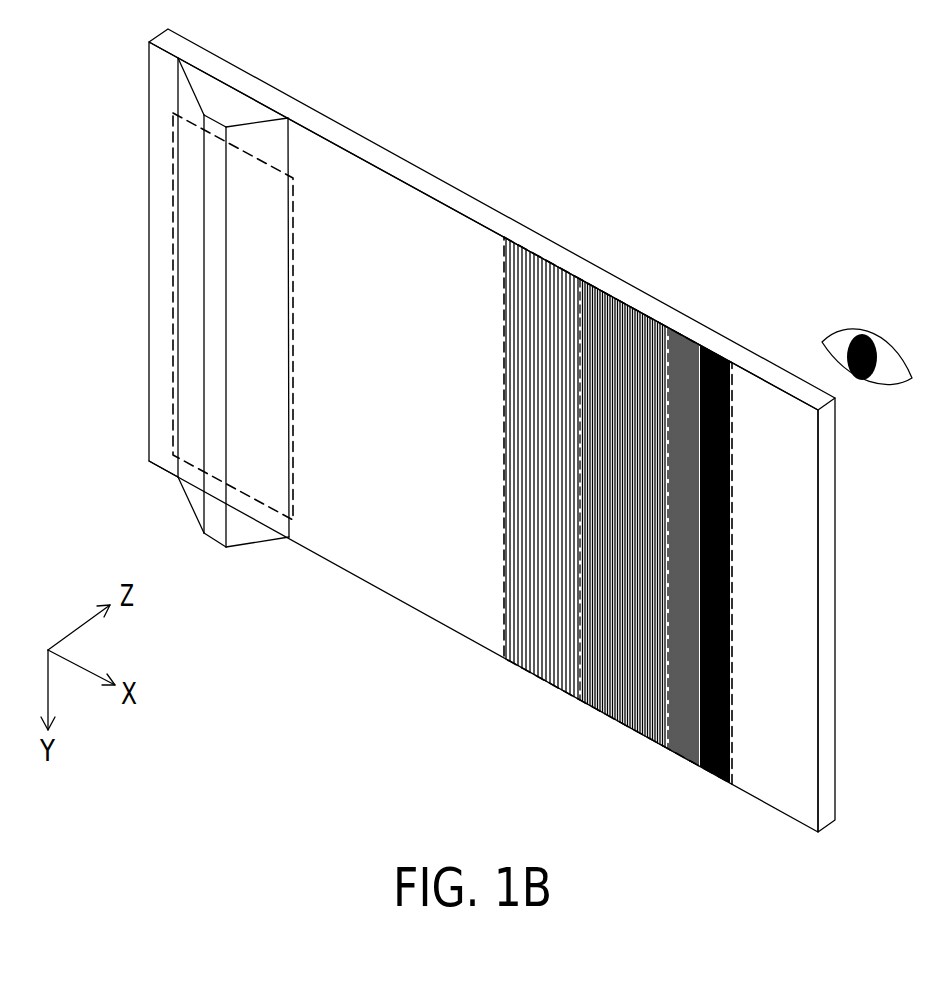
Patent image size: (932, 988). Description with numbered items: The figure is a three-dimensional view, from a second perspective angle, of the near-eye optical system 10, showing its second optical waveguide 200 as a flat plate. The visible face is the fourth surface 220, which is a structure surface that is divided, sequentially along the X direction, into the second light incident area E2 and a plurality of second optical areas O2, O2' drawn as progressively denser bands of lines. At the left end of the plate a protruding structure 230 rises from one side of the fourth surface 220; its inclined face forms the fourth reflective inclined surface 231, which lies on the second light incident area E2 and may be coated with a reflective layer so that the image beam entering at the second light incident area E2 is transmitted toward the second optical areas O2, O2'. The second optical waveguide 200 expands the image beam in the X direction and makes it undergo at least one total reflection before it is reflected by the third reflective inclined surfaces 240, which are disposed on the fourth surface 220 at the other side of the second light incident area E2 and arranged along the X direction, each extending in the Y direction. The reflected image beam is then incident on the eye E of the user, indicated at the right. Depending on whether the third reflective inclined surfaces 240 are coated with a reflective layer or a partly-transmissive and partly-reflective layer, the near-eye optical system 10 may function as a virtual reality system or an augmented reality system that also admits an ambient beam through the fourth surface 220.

The near-eye optical system 10 is at (483, 430).
The second optical waveguide 200 is at (162, 80).
The fourth surface 220 is at (181, 302).
The protruding structure 230 is at (183, 230).
The fourth reflective inclined surface 231 is at (187, 283).
The third reflective inclined surface 240 is at (698, 482).
The eye E is at (888, 345).
The second light incident area E2 is at (294, 343).
The second optical area O2 is at (543, 440).
The second optical area O2' is at (700, 524).